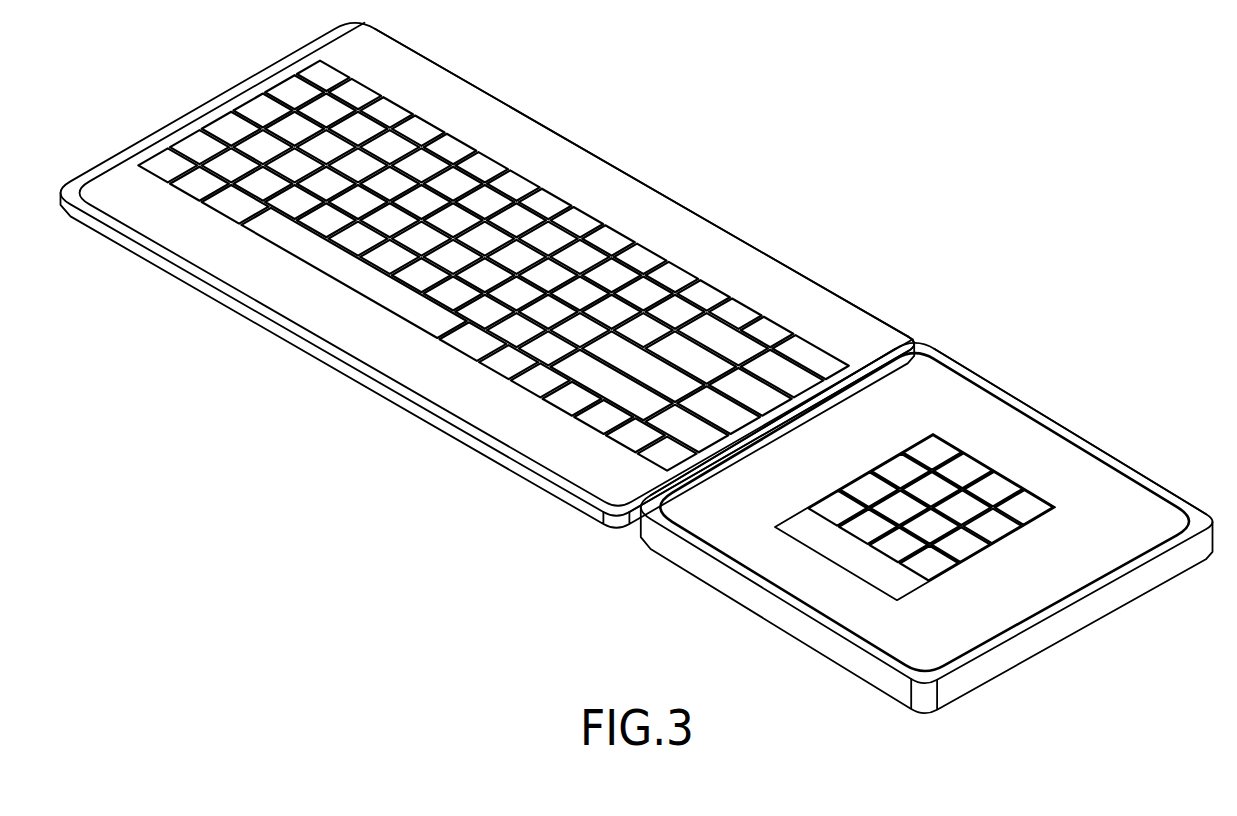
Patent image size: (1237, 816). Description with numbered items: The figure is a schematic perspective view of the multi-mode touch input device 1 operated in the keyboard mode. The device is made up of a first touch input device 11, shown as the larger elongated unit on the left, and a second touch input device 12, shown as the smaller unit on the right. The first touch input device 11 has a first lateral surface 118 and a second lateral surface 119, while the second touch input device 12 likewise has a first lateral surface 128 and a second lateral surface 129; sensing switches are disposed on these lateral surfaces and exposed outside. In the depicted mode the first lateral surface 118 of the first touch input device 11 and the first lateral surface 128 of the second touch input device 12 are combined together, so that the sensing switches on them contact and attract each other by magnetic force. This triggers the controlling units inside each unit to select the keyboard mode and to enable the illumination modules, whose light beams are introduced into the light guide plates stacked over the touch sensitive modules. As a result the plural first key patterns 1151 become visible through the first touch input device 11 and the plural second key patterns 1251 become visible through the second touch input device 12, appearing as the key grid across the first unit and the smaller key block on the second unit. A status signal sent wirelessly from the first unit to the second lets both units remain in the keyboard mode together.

The multi-mode touch input device 1 is at (967, 231).
The first touch input device 11 is at (671, 223).
The second lateral surface 119 is at (780, 261).
The first lateral surface 118 is at (885, 358).
The first key patterns 1151 is at (333, 233).
The second touch input device 12 is at (1028, 440).
The second lateral surface 129 is at (990, 380).
The first lateral surface 128 is at (850, 378).
The second key patterns 1251 is at (978, 532).